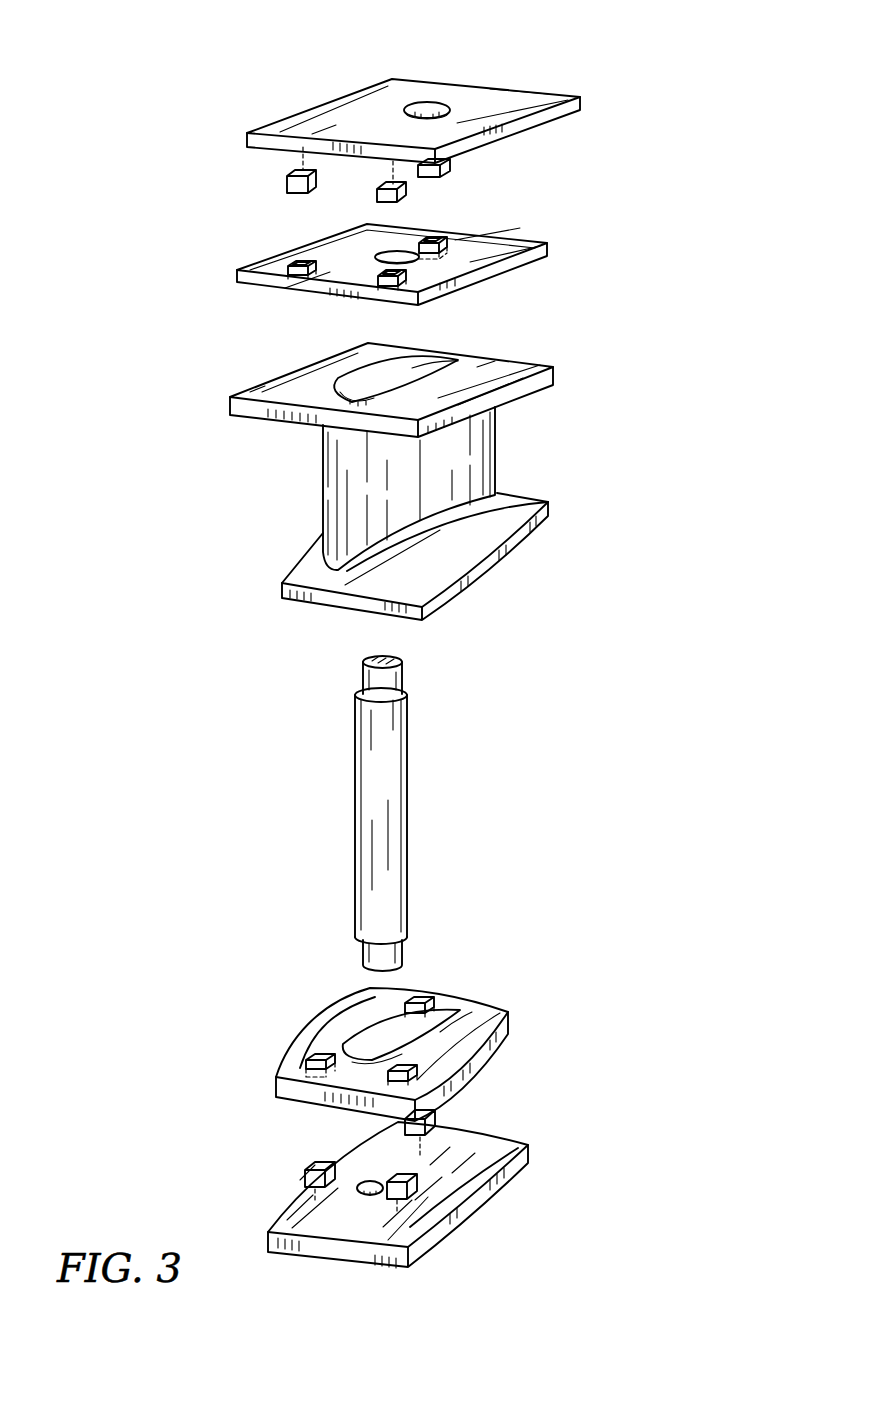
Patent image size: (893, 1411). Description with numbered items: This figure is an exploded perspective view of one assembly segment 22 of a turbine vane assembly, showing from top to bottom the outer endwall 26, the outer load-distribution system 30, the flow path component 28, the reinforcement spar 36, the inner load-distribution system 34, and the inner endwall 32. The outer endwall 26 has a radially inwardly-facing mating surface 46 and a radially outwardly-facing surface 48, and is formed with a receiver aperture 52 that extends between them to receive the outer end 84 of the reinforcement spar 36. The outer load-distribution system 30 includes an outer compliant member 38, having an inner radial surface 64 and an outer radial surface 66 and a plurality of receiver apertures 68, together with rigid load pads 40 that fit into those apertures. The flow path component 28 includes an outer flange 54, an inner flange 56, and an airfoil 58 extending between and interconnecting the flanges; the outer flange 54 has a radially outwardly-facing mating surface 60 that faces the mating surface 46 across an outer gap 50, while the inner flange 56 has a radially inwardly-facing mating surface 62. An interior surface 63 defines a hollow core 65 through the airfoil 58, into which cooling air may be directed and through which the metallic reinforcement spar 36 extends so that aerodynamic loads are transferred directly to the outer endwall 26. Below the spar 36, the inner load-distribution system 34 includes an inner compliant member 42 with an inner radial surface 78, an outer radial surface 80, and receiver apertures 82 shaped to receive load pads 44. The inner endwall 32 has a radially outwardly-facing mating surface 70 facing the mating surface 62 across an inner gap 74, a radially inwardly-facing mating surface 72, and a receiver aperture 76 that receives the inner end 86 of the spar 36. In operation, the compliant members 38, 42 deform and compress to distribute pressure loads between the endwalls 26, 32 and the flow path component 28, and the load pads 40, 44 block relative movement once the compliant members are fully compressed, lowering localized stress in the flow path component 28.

The assembly segment 22 is at (640, 82).
The outer endwall 26 is at (318, 122).
The flow path component 28 is at (245, 515).
The outer load-distribution system 30 is at (182, 203).
The inner endwall 32 is at (240, 1237).
The inner load-distribution system 34 is at (226, 1080).
The reinforcement spar 36 is at (345, 830).
The outer compliant member 38 is at (525, 275).
The load pad 40 is at (283, 180).
The inner compliant member 42 is at (502, 1005).
The load pad 44 is at (433, 1118).
The radially inwardly-facing mating surface 46 is at (362, 150).
The radially outwardly-facing surface 48 is at (490, 92).
The outer gap 50 is at (255, 353).
The receiver aperture 52 is at (427, 102).
The outer flange 54 is at (507, 372).
The inner flange 56 is at (560, 503).
The airfoil 58 is at (460, 443).
The radially outwardly-facing mating surface 60 is at (275, 390).
The radially inwardly-facing mating surface 62 is at (370, 571).
The interior surface 63 is at (413, 367).
The inner radial surface 64 is at (462, 283).
The hollow core 65 is at (366, 386).
The outer radial surface 66 is at (505, 246).
The receiver apertures 68 is at (450, 233).
The radially outwardly-facing mating surface 70 is at (505, 1147).
The radially inwardly-facing mating surface 72 is at (352, 1220).
The inner gap 74 is at (520, 1092).
The receiver aperture 76 is at (375, 1182).
The inner radial surface 78 is at (465, 1066).
The outer radial surface 80 is at (362, 1010).
The receiver apertures 82 is at (410, 1004).
The outer end 84 is at (407, 673).
The inner end 86 is at (407, 950).